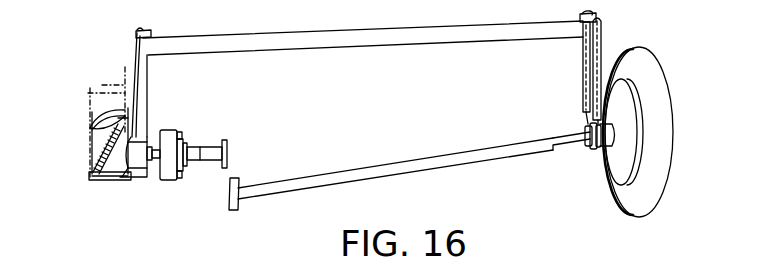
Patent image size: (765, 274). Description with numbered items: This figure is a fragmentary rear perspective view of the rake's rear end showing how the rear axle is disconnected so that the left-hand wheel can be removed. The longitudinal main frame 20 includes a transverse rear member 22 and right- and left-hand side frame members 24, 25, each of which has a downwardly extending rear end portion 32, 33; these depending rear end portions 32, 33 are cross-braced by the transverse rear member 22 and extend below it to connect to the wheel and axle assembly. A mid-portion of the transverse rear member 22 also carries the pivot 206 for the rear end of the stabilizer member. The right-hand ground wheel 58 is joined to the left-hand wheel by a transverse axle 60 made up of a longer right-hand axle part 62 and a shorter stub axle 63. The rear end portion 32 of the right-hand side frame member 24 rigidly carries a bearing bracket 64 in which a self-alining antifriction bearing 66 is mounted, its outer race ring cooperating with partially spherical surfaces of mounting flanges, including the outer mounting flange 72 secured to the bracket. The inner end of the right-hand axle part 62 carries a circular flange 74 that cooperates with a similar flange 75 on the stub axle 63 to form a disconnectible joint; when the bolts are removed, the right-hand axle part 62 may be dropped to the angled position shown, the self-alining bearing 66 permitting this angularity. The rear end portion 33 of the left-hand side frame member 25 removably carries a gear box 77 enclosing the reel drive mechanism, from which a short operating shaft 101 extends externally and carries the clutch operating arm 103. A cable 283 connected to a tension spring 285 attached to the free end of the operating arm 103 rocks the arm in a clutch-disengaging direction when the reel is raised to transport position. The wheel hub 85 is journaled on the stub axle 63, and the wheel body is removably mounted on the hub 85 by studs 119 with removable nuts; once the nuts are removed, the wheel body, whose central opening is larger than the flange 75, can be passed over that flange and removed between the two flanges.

The longitudinal main frame 20 is at (217, 26).
The transverse rear member 22 is at (438, 33).
The pivot 206 is at (336, 41).
The right-hand side frame member 24 is at (591, 14).
The left-hand side frame member 25 is at (143, 32).
The rear end portion of right-hand side frame member 32 is at (600, 43).
The rear end portion of left-hand side frame member 33 is at (130, 70).
The right-hand ground wheel 58 is at (653, 83).
The transverse axle 60 is at (414, 169).
The right-hand axle part 62 is at (360, 172).
The stub axle 63 is at (205, 161).
The bearing bracket 64 is at (594, 119).
The self-alining antifriction bearing 66 is at (593, 146).
The outer mounting flange 72 is at (598, 150).
The circular flange or attaching element 74 is at (237, 180).
The flange on stub axle 75 is at (227, 140).
The gear box 77 is at (97, 105).
The hub 85 is at (165, 129).
The operating shaft 101 is at (117, 180).
The operating arm 103 is at (104, 179).
The studs 119 is at (180, 132).
The cable 283 is at (92, 126).
The tension spring 285 is at (100, 151).